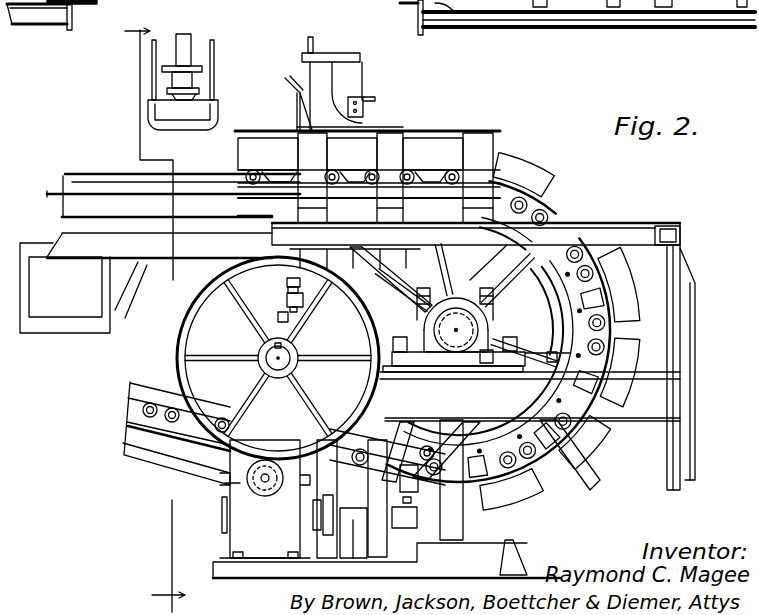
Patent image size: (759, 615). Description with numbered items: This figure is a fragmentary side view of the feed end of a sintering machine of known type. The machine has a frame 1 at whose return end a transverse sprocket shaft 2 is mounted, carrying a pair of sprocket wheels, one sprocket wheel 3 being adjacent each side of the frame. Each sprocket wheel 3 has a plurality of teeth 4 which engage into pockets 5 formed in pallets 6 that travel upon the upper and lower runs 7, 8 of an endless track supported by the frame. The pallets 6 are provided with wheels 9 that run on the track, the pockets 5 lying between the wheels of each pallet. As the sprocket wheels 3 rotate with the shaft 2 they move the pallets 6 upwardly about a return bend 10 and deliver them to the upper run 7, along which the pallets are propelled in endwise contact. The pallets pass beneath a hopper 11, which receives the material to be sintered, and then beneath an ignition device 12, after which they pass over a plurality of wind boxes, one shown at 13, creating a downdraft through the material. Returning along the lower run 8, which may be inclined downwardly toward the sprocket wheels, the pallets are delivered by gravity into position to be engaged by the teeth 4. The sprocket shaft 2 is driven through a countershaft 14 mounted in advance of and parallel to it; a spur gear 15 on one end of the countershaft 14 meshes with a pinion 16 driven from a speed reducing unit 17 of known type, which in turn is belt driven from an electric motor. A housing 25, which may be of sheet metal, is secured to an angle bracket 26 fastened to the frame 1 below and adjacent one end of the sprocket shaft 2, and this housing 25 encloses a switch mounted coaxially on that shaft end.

The frame 1 is at (648, 198).
The sprocket shaft 2 is at (437, 367).
The sprocket wheel 3 is at (513, 280).
The teeth 4 is at (570, 340).
The pockets 5 is at (600, 307).
The pallets 6 is at (575, 200).
The upper run 7 is at (83, 192).
The lower run 8 is at (122, 417).
The wheels 9 is at (183, 395).
The return bend 10 is at (626, 237).
The hopper 11 is at (353, 80).
The ignition device 12 is at (185, 118).
The wind box 13 is at (117, 287).
The countershaft 14 is at (271, 361).
The spur gear 15 is at (176, 333).
The pinion 16 is at (250, 497).
The speed reducing unit 17 is at (230, 490).
The housing 25 is at (458, 310).
The angle bracket 26 is at (460, 357).